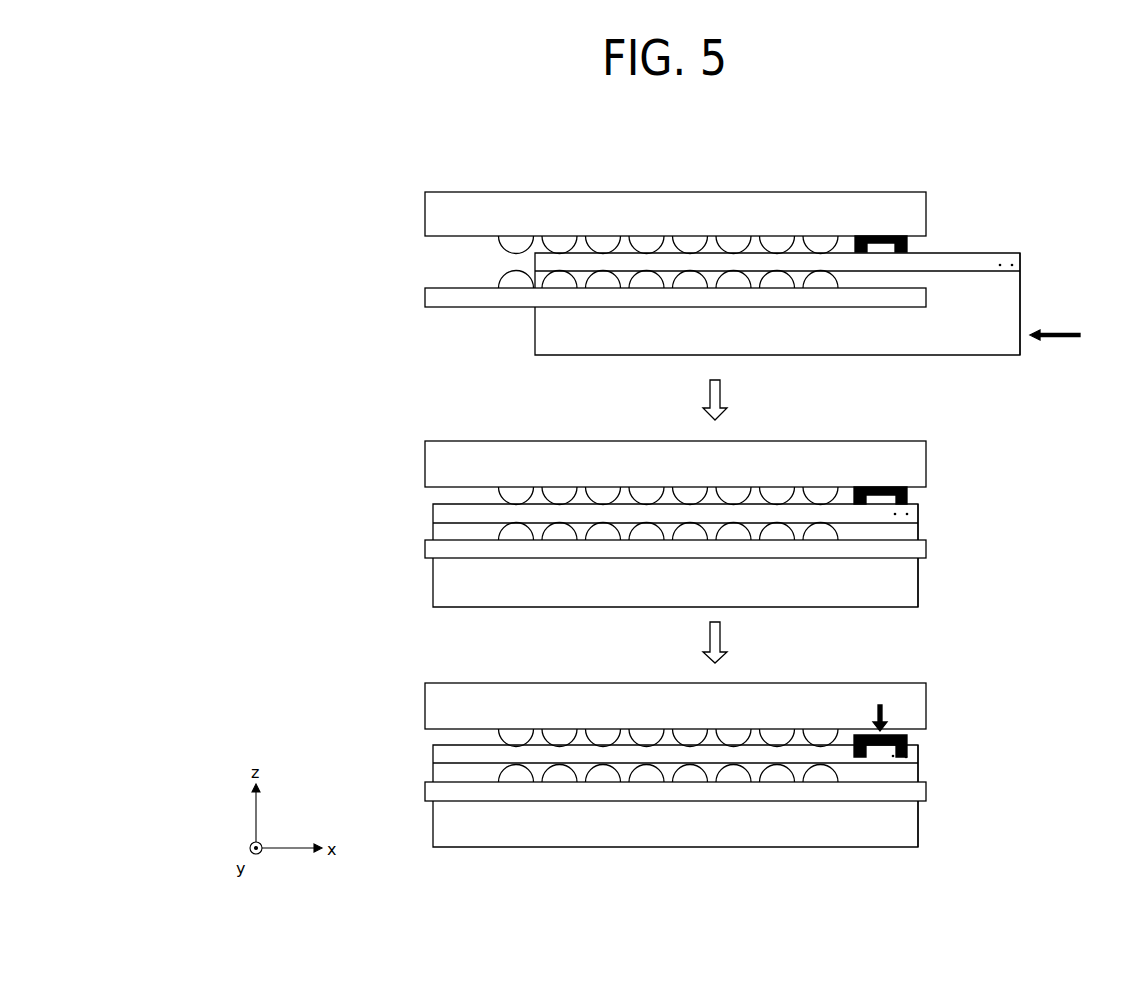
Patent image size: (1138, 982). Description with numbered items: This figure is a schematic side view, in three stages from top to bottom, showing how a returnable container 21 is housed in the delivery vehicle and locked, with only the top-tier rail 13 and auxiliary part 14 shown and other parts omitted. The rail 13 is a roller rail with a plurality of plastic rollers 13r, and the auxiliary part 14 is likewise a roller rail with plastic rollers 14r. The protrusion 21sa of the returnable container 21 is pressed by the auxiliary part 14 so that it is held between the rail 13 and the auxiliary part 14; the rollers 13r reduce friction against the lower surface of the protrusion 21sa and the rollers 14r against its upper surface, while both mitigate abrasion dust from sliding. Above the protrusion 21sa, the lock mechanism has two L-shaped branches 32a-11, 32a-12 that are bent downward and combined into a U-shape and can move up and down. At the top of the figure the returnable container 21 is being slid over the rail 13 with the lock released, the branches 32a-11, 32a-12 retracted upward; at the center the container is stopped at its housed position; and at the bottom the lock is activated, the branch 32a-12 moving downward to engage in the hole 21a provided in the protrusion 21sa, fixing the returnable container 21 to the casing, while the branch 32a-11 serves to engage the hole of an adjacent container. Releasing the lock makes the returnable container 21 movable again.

The rail 13 is at (683, 308).
The rollers 13r is at (610, 278).
The auxiliary part 14 is at (712, 192).
The rollers 14r is at (557, 240).
The returnable container 21 is at (610, 355).
The protrusion 21sa is at (983, 253).
The hole 21a is at (1025, 272).
The branch 32a-11 is at (850, 236).
The branch 32a-12 is at (910, 250).